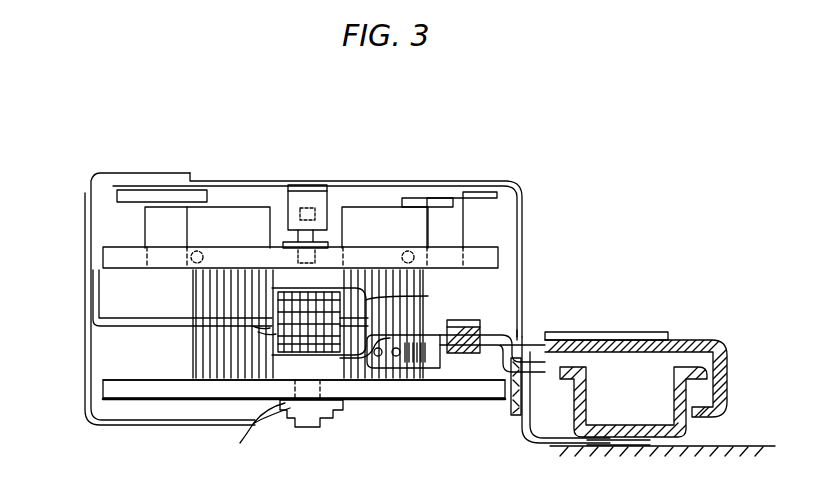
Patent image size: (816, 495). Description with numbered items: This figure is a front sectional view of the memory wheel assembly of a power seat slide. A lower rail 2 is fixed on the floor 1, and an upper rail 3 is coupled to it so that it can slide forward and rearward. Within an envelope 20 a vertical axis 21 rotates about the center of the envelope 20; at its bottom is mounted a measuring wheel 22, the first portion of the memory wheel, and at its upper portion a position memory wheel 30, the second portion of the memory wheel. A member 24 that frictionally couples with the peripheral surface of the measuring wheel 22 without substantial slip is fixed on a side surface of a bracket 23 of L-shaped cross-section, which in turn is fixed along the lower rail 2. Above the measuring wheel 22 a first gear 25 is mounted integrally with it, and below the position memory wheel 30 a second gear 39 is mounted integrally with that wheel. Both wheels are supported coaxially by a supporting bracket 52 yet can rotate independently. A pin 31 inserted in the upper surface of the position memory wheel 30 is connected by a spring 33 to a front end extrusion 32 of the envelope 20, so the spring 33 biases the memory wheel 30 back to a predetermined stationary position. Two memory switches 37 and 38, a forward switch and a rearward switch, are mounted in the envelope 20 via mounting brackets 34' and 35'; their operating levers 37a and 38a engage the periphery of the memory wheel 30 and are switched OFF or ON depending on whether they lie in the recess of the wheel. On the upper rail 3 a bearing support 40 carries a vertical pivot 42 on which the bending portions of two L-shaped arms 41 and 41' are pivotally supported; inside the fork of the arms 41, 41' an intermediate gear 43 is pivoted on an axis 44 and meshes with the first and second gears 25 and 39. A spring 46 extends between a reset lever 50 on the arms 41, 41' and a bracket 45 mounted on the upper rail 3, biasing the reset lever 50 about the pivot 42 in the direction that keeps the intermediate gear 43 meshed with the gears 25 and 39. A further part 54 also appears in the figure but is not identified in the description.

The floor 1 is at (740, 447).
The lower rail 2 is at (677, 445).
The upper rail 3 is at (712, 340).
The envelope 20 is at (503, 183).
The vertical axis 21 is at (303, 427).
The measuring wheel 22 is at (147, 393).
The bracket 23 is at (590, 444).
The member 24 is at (524, 442).
The first gear 25 is at (207, 380).
The position memory wheel 30 is at (455, 255).
The pin 31 is at (342, 232).
The front end extrusion 32 is at (283, 192).
The spring 33 is at (310, 210).
The mounting bracket 34' is at (484, 170).
The mounting bracket 35' is at (151, 170).
The memory switch 37 is at (375, 250).
The operating lever 37a is at (405, 250).
The memory switch 38 is at (197, 213).
The operating lever 38a is at (197, 250).
The second gear 39 is at (190, 292).
The bearing support 40 is at (503, 337).
The L-shaped arm 41 is at (390, 389).
The L-shaped arm 41' is at (411, 395).
The vertical axis 42 is at (513, 337).
The intermediate gear 43 is at (272, 295).
The axis 44 is at (362, 298).
The bracket 45 is at (458, 356).
The spring 46 is at (408, 368).
The reset lever 50 is at (517, 417).
The supporting bracket 52 is at (133, 328).
The spring clip 54 is at (277, 338).